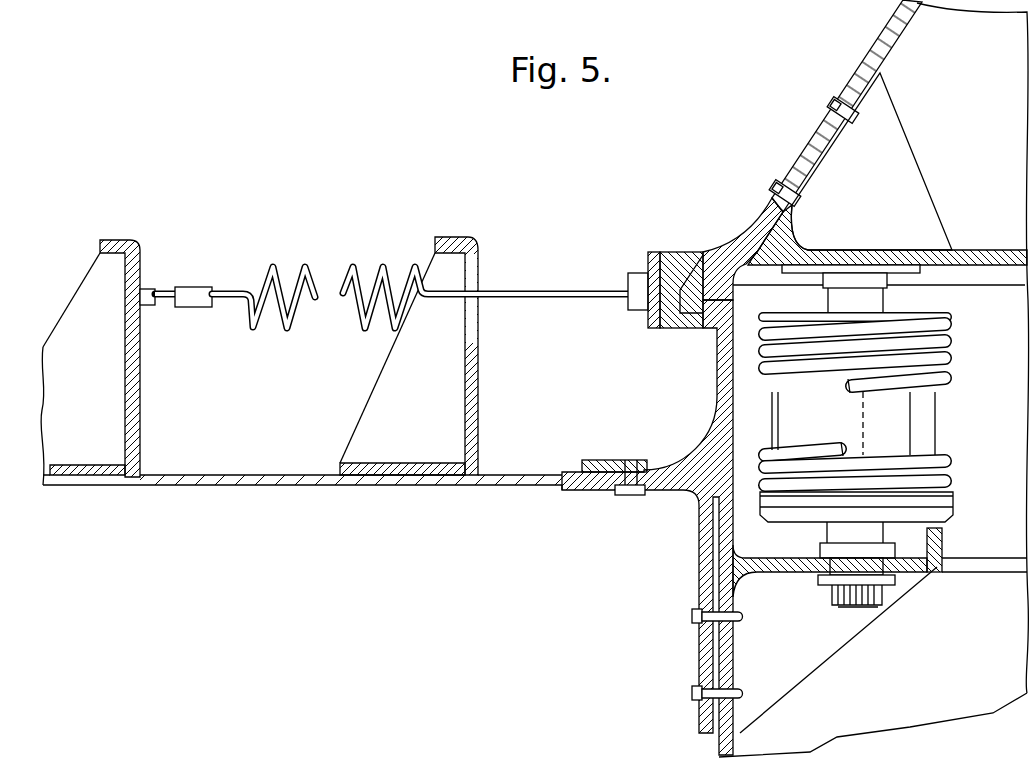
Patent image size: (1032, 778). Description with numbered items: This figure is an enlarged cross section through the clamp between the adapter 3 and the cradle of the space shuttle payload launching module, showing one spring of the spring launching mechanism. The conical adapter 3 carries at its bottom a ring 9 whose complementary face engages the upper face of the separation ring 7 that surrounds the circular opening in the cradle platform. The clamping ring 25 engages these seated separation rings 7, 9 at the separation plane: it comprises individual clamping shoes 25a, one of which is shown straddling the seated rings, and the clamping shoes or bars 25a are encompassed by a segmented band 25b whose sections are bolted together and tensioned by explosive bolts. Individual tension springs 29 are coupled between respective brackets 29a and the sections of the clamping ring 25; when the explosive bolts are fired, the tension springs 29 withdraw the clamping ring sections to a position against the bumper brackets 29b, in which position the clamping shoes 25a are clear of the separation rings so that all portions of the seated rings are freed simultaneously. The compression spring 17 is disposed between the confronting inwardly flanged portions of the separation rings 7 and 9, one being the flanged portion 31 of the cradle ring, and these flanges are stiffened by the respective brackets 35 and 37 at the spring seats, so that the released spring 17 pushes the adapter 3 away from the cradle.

The adapter 3 is at (868, 52).
The separation ring 7 is at (714, 326).
The ring 9 is at (736, 246).
The compression spring 17 is at (951, 360).
The clamping ring 25 is at (650, 337).
The clamping shoe 25a is at (680, 252).
The segmented band 25b is at (648, 252).
The tension spring 29 is at (309, 268).
The bracket 29a is at (140, 252).
The bumper bracket 29b is at (470, 240).
The inwardly flanged portion 31 is at (776, 558).
The bracket 35 is at (830, 645).
The bracket 37 is at (930, 236).